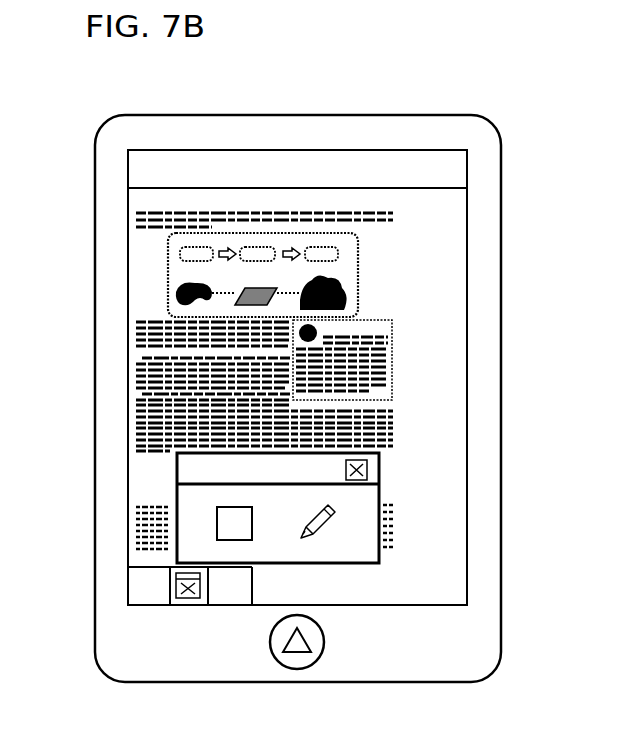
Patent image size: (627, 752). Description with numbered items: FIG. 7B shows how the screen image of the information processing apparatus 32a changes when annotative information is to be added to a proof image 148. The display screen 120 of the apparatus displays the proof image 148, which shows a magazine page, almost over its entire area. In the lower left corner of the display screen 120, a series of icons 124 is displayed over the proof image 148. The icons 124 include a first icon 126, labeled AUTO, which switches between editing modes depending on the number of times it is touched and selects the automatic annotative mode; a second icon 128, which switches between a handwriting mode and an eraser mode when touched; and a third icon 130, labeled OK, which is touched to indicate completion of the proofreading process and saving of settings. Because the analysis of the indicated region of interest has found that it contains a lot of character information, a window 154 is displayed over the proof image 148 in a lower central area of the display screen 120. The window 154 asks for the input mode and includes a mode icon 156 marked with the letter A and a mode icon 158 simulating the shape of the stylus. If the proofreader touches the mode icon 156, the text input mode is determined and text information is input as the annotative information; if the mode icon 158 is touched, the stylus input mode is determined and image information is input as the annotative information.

The information processing apparatus 32a is at (99, 92).
The display screen 120 is at (480, 196).
The proof image 148 is at (432, 263).
The window 154 is at (380, 466).
The mode icon 156 is at (252, 535).
The mode icon 158 is at (325, 520).
The icons 124 is at (260, 636).
The third icon 130 is at (150, 605).
The second icon 128 is at (190, 605).
The first icon 126 is at (230, 605).